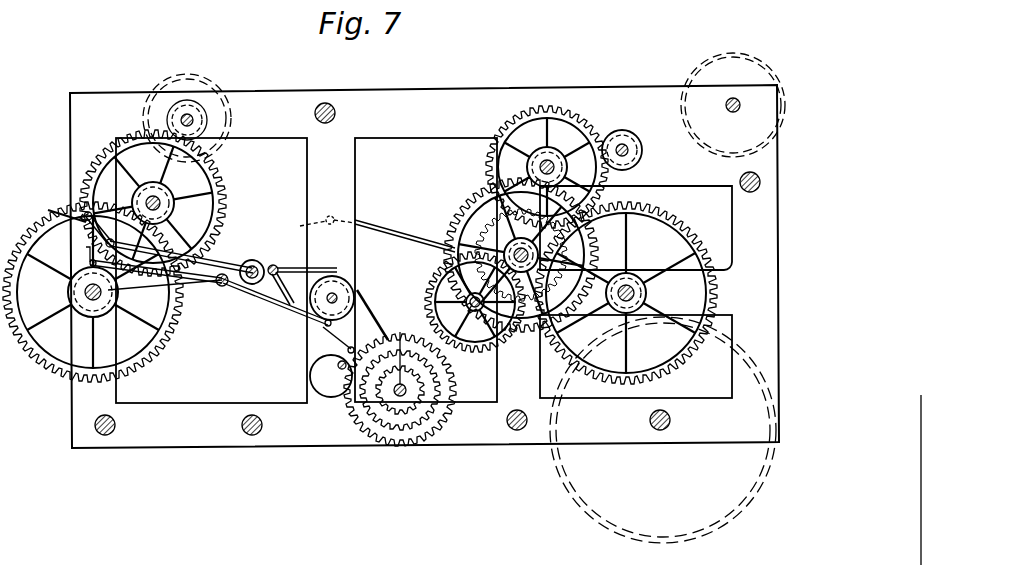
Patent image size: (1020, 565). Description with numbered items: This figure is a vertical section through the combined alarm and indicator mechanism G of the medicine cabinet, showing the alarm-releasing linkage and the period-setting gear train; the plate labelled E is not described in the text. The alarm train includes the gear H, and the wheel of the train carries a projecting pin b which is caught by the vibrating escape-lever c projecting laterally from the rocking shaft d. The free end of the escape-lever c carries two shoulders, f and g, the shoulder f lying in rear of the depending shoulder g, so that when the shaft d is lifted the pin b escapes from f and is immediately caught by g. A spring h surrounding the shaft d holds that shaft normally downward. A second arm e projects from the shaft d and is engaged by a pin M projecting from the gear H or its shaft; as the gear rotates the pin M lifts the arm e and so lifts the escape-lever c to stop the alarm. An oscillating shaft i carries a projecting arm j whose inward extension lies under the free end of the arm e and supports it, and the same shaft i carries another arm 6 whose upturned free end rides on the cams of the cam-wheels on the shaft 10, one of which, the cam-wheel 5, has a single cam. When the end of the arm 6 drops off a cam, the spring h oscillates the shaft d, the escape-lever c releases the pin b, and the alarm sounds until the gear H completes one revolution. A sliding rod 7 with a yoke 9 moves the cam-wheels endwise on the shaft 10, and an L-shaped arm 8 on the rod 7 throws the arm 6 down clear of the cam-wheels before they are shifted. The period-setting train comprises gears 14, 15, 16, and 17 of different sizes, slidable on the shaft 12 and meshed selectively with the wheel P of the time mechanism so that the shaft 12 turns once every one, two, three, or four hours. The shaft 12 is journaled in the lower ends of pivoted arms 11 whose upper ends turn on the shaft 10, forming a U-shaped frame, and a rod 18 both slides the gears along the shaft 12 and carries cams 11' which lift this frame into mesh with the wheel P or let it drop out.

The combined alarm and indicator mechanism G is at (252, 108).
The frame plate window E is at (605, 96).
The projecting shoulder g is at (61, 207).
The projecting shoulder f is at (95, 242).
The pin M is at (68, 288).
The projecting pin b is at (107, 232).
The escape-lever c is at (150, 262).
The spring h is at (253, 260).
The sliding rod 7 is at (277, 271).
The yoke 9 is at (316, 268).
The projecting arm j is at (165, 291).
The laterally-projecting arm e is at (190, 284).
The oscillating shaft i is at (222, 287).
The rocking shaft d is at (248, 280).
The L-shaped arm 8 is at (278, 298).
The projecting arm 6 is at (297, 310).
The gear of the alarm train H is at (160, 347).
The rod 18 is at (338, 366).
The cams 11' is at (310, 379).
The cam-wheel 5 is at (353, 292).
The shaft 10 is at (340, 298).
The shaft 12 is at (403, 347).
The pivoted arms 11 is at (355, 321).
The gear 17 is at (412, 392).
The wheel of the time mechanism P is at (507, 332).
The gear 16 is at (387, 403).
The gear 15 is at (420, 443).
The gear 14 is at (378, 446).